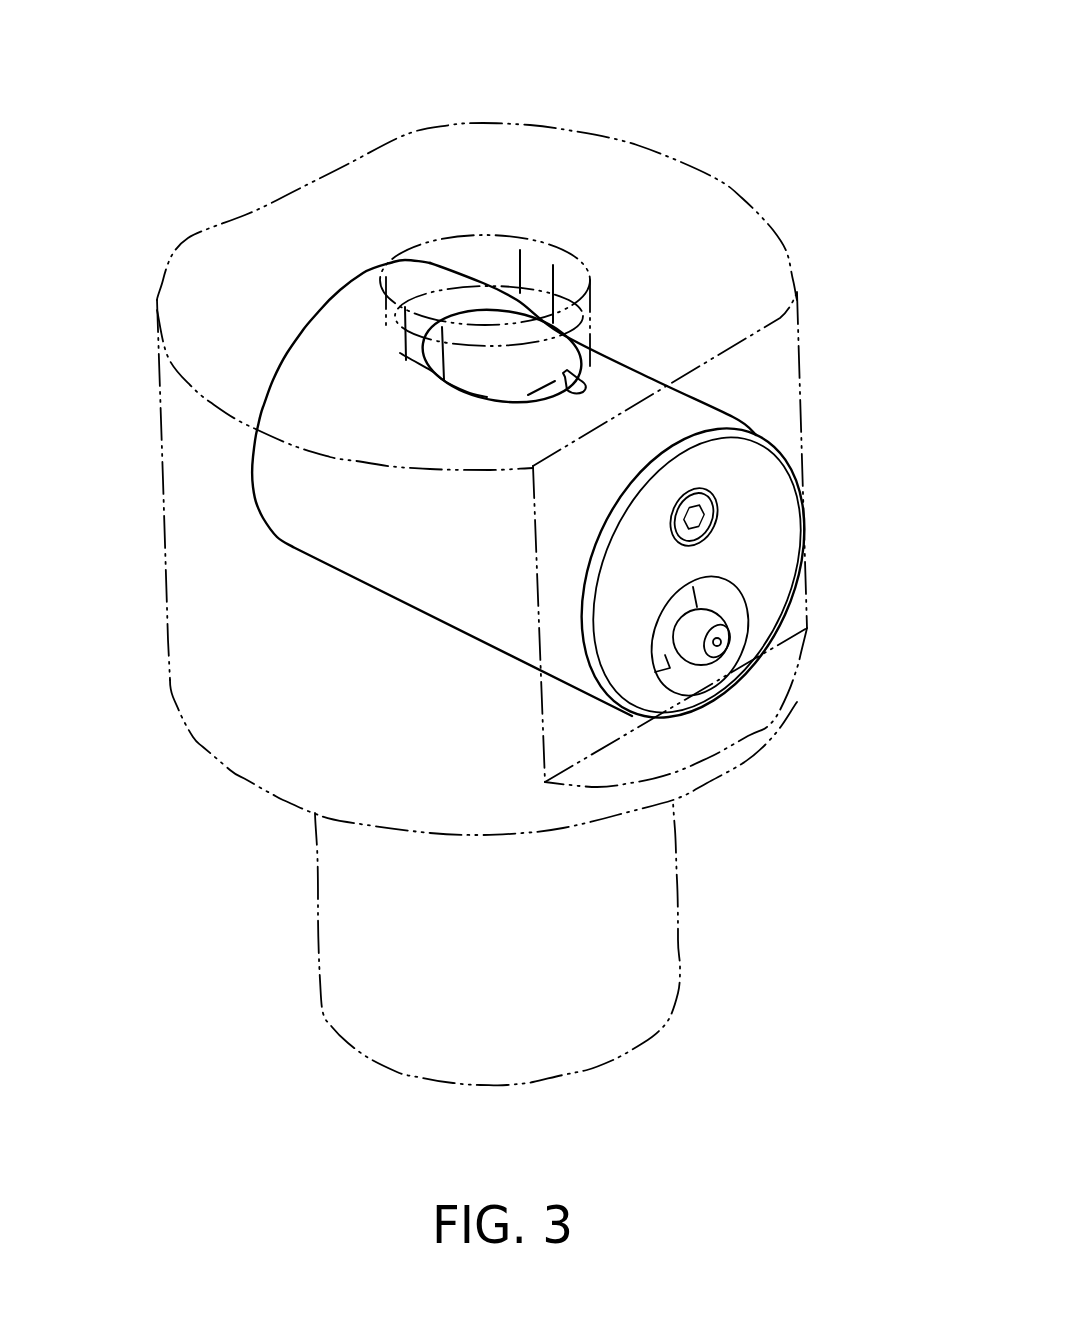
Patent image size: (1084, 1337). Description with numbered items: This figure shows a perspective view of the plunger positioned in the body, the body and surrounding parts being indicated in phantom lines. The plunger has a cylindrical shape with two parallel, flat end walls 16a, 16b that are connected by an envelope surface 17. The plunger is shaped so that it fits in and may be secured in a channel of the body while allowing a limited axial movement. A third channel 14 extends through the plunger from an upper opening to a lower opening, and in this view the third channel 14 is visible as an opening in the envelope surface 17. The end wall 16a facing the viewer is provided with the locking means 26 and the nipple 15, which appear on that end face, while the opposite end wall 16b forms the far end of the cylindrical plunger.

The third channel 14 is at (483, 328).
The end wall 16b is at (262, 330).
The envelope surface 17 is at (398, 538).
The end wall 16a is at (750, 470).
The locking means 26 is at (703, 505).
The nipple 15 is at (720, 642).